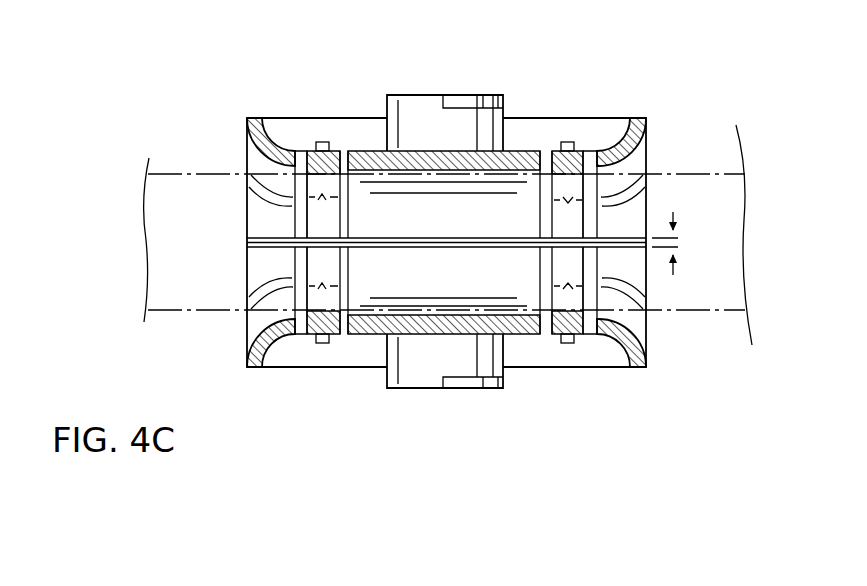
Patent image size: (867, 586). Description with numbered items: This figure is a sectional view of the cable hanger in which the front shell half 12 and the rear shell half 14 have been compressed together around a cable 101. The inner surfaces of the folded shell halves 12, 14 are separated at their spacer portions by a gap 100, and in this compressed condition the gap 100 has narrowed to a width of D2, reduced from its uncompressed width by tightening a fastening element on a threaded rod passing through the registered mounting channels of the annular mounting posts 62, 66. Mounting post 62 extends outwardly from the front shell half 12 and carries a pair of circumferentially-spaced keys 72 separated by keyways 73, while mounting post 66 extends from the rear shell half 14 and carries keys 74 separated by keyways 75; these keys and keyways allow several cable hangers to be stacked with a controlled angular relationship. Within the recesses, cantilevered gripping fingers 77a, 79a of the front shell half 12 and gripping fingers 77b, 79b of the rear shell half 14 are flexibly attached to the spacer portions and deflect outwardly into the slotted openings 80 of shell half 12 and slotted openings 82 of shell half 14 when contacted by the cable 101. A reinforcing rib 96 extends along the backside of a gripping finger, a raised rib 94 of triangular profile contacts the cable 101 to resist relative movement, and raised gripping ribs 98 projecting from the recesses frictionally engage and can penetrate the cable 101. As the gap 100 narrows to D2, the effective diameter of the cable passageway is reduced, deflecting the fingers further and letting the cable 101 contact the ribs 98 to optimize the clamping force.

The front shell half 12 is at (245, 128).
The rear shell half 14 is at (244, 360).
The annular mounting post 62 is at (385, 130).
The annular mounting post 66 is at (385, 381).
The keys 72 is at (412, 95).
The keyways 73 is at (455, 105).
The keys 74 is at (417, 390).
The keyways 75 is at (460, 390).
The cantilevered gripping finger 77a is at (592, 275).
The cantilevered gripping finger 77b is at (592, 213).
The cantilevered gripping finger 79a is at (302, 273).
The cantilevered gripping finger 79b is at (302, 208).
The slotted openings 80 is at (299, 148).
The slotted openings 82 is at (304, 328).
The raised rib 94 is at (326, 201).
The reinforcing rib 96 is at (320, 142).
The raised gripping ribs 98 is at (500, 172).
The gap 100 is at (242, 241).
The cable 101 is at (455, 222).
The gap width D2 is at (673, 212).